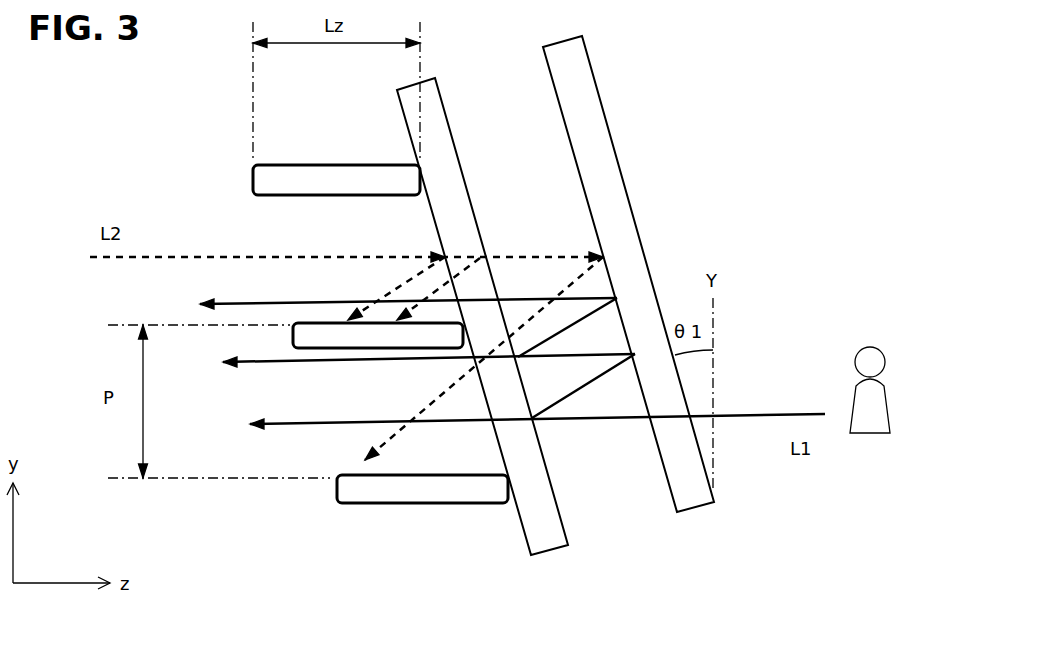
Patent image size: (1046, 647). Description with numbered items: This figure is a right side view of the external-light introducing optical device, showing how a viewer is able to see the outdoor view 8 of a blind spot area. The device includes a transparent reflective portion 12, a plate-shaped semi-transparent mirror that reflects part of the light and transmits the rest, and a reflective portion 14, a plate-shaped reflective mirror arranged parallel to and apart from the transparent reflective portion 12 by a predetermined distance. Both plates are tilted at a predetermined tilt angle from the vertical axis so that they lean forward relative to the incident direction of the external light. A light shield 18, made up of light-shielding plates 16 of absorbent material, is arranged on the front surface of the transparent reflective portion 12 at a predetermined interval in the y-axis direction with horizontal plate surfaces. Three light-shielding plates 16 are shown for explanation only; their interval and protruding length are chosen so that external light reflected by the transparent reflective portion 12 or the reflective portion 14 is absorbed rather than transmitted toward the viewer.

The outdoor view 8 is at (880, 398).
The transparent reflective portion 12 is at (546, 534).
The reflective portion 14 is at (698, 504).
The light-shielding plates 16 is at (262, 184).
The light shield 18 is at (265, 518).